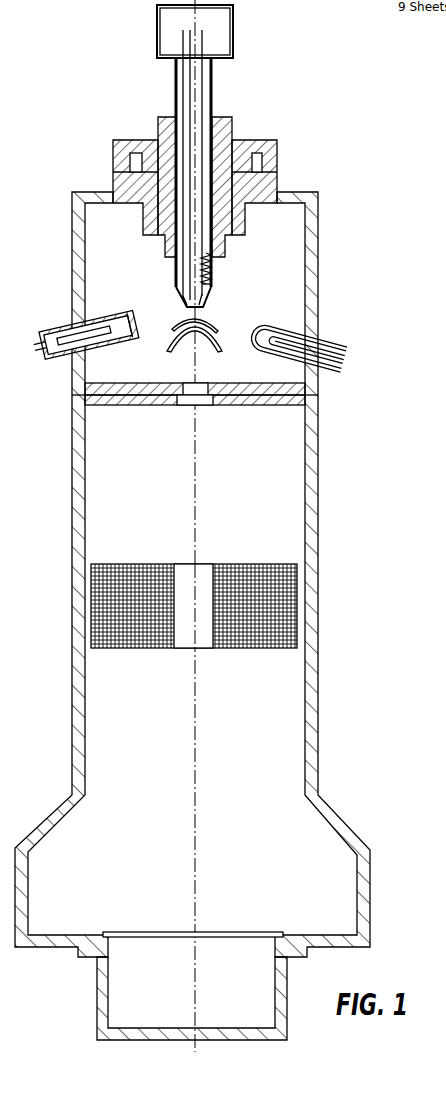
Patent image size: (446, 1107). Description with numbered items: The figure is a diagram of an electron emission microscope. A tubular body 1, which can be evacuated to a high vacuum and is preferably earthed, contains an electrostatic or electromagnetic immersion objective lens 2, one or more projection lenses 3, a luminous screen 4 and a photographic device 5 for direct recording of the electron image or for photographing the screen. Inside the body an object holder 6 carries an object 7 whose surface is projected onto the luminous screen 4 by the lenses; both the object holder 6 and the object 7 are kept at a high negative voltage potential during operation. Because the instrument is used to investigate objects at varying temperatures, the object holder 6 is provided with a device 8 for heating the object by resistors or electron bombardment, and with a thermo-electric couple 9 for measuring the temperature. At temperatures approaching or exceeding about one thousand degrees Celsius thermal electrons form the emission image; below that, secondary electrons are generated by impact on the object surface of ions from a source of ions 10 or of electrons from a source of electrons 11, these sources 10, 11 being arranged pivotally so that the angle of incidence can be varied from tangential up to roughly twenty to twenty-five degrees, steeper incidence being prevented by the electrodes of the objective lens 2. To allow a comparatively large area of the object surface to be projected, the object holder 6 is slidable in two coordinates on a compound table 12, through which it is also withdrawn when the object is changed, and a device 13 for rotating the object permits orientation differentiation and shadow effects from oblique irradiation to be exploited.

The tubular body 1 is at (318, 303).
The objective lens 2 is at (176, 325).
The projection lens 3 is at (276, 604).
The luminous screen 4 is at (248, 932).
The photographic device 5 is at (123, 985).
The object holder 6 is at (213, 88).
The object 7 is at (182, 304).
The device for heating the object 8 is at (213, 264).
The thermo-electric couple 9 is at (204, 287).
The source of ions 10 is at (63, 361).
The source of electrons 11 is at (284, 349).
The compound table 12 is at (277, 168).
The device for rotating the object 13 is at (230, 126).